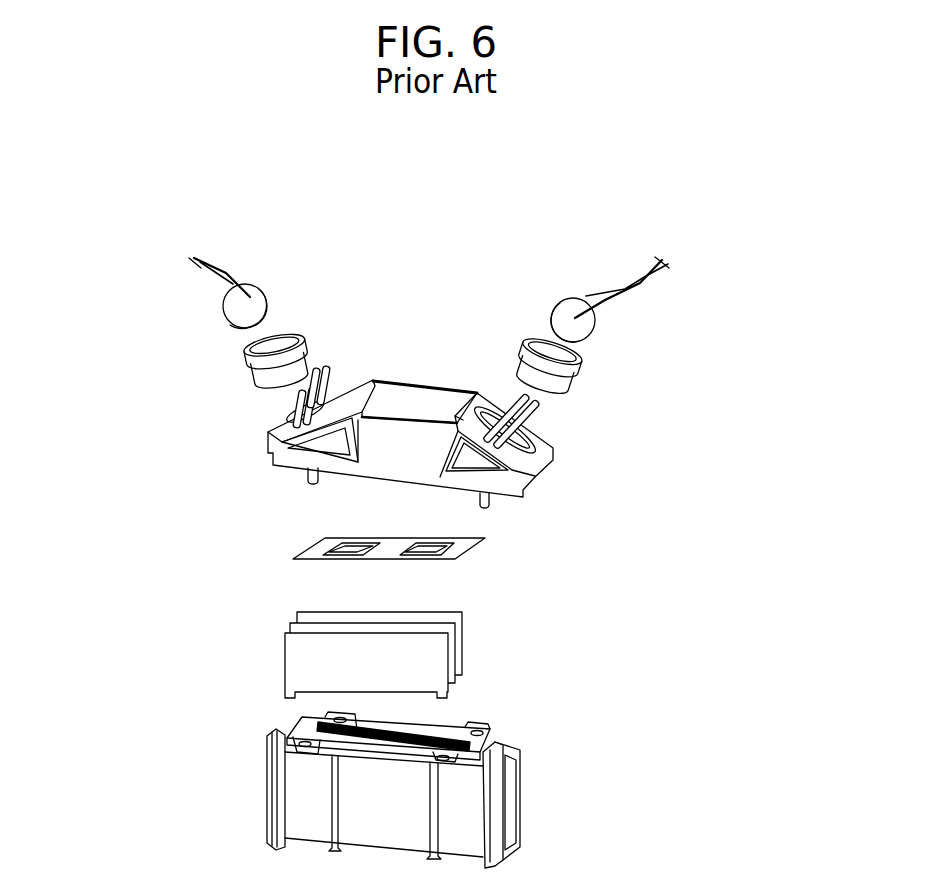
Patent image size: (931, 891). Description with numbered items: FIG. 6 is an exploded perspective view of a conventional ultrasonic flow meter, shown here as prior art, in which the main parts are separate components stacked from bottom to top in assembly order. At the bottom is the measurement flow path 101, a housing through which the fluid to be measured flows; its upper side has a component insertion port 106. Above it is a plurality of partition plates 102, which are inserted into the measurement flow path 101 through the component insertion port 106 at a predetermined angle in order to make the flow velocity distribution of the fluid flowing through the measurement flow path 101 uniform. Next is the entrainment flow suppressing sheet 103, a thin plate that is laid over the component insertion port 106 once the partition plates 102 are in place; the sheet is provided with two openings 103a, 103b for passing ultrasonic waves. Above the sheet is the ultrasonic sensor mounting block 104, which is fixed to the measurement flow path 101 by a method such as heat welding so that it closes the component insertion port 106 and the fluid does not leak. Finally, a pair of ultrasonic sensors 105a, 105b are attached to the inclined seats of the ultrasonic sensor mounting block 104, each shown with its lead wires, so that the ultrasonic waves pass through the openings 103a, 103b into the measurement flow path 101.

The measurement flow path 101 is at (513, 802).
The partition plates 102 is at (462, 675).
The entrainment flow suppressing sheet 103 is at (305, 551).
The opening 103a is at (437, 540).
The opening 103b is at (357, 543).
The ultrasonic sensor mounting block 104 is at (427, 393).
The ultrasonic sensor 105a is at (563, 300).
The ultrasonic sensor 105b is at (258, 288).
The component insertion port 106 is at (487, 733).